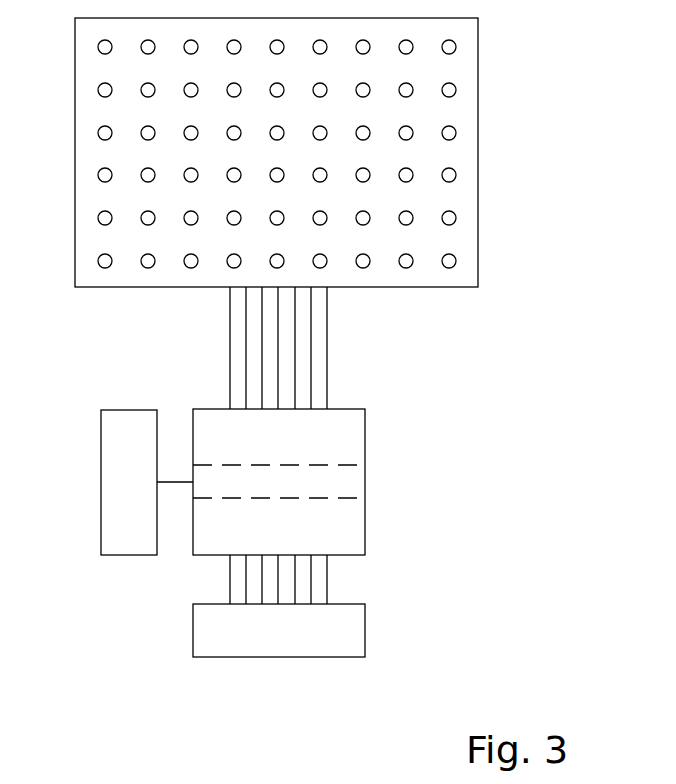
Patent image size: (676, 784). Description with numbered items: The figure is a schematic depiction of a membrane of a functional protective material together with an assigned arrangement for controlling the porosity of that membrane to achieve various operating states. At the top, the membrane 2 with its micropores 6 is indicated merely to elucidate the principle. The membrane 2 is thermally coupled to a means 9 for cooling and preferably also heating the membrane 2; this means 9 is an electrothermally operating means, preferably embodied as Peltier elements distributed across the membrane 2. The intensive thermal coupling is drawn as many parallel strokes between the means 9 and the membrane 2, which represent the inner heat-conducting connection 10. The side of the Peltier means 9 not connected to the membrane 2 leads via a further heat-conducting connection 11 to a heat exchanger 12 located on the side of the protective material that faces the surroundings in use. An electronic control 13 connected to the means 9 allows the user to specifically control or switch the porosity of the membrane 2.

The membrane 2 is at (322, 152).
The micropores 6 is at (456, 47).
The means for cooling and heating 9 is at (353, 445).
The inner heat-conducting connection 10 is at (328, 353).
The heat-conducting connection 11 is at (330, 578).
The heat exchanger 12 is at (353, 638).
The electronic control 13 is at (101, 482).